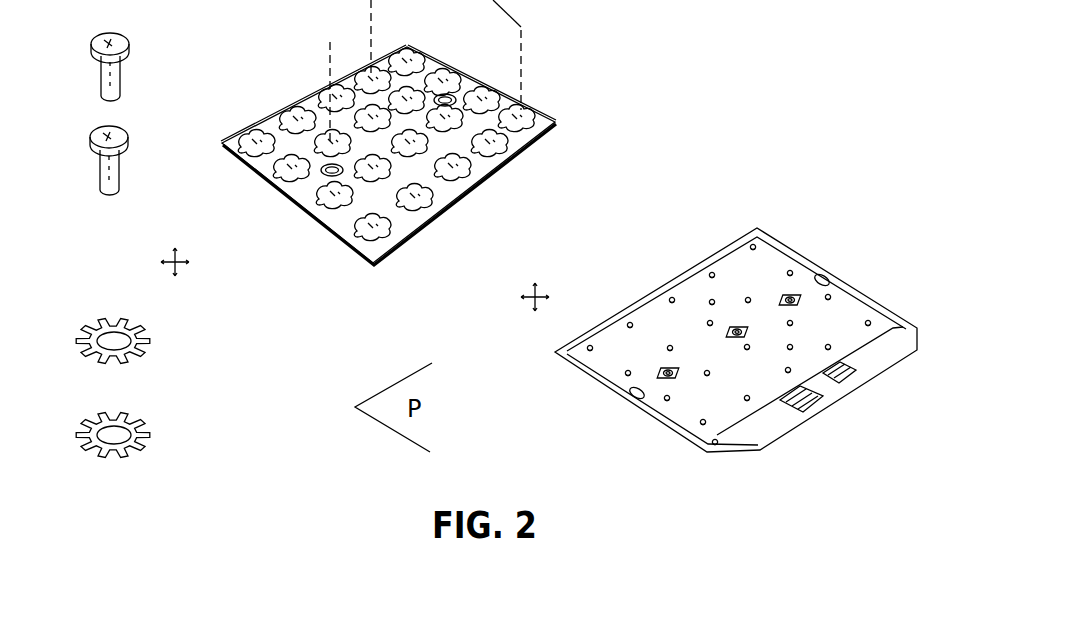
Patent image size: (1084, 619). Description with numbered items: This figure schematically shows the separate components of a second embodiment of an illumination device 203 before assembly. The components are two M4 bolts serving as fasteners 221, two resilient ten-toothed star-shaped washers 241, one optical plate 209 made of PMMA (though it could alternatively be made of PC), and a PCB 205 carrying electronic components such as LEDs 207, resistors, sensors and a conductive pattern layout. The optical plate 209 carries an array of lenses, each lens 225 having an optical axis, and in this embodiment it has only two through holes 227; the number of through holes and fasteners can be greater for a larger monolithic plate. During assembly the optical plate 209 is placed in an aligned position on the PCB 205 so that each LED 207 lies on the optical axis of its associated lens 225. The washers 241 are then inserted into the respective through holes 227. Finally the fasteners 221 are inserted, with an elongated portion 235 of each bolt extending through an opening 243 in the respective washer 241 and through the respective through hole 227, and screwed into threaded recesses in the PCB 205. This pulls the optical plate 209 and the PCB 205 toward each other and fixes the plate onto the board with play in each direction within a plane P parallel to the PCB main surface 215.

The illumination device 203 is at (687, 85).
The PCB 205 is at (722, 309).
The LEDs 207 is at (749, 299).
The optical plate 209 is at (429, 142).
The PCB main surface 215 is at (733, 415).
The fasteners 221 is at (167, 114).
The lens 225 is at (522, 115).
The through holes 227 is at (445, 99).
The elongated portion 235 is at (117, 163).
The star-shaped washers 241 is at (170, 388).
The opening 243 is at (113, 433).